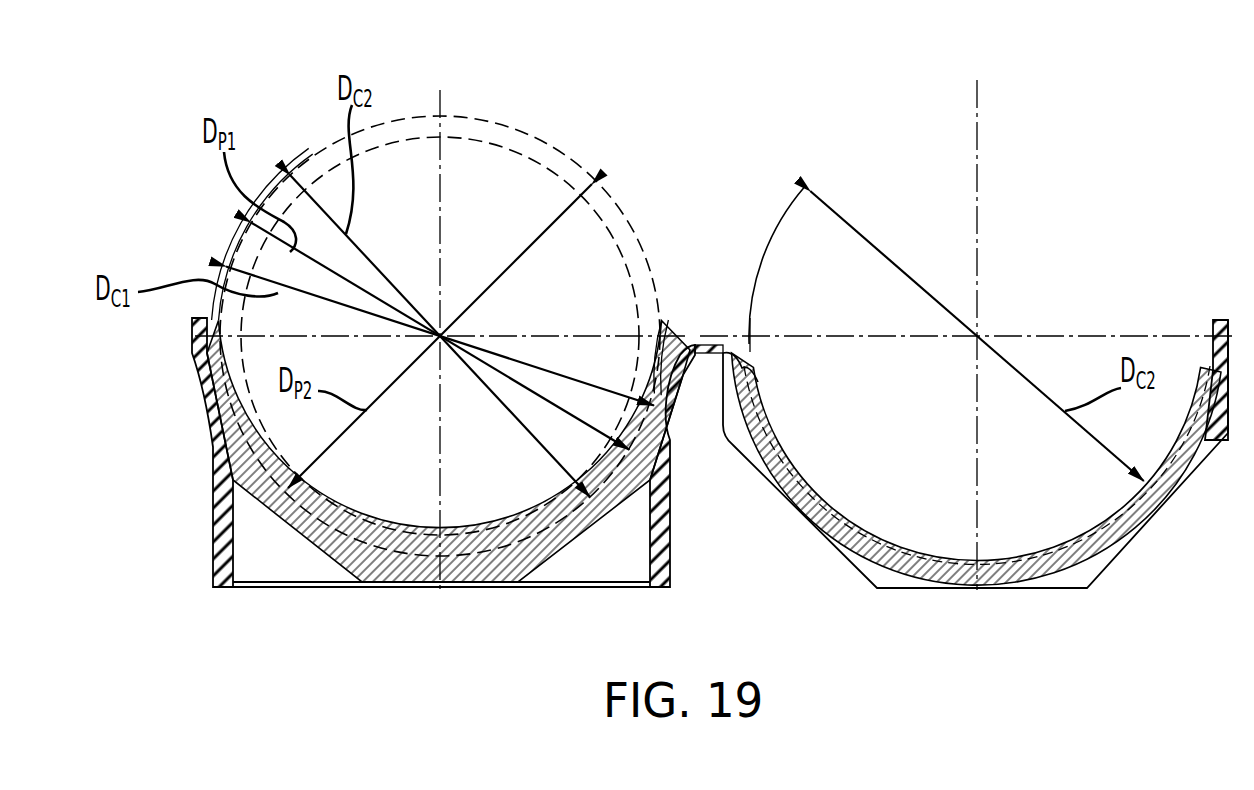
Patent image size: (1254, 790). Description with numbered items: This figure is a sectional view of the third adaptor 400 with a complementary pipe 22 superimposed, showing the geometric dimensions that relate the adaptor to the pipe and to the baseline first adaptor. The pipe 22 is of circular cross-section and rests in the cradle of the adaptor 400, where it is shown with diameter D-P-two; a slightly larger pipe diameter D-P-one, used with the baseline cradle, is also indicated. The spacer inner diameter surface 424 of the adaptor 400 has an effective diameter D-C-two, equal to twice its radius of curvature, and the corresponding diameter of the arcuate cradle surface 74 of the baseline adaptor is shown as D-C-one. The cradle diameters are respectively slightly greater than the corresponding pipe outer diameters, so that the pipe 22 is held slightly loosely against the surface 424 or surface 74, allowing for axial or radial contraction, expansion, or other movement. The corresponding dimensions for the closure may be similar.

The pipe 22 is at (488, 130).
The arcuate cradle surface 74 is at (202, 405).
The adaptor 400 is at (377, 628).
The inner diameter surface 424 is at (497, 553).